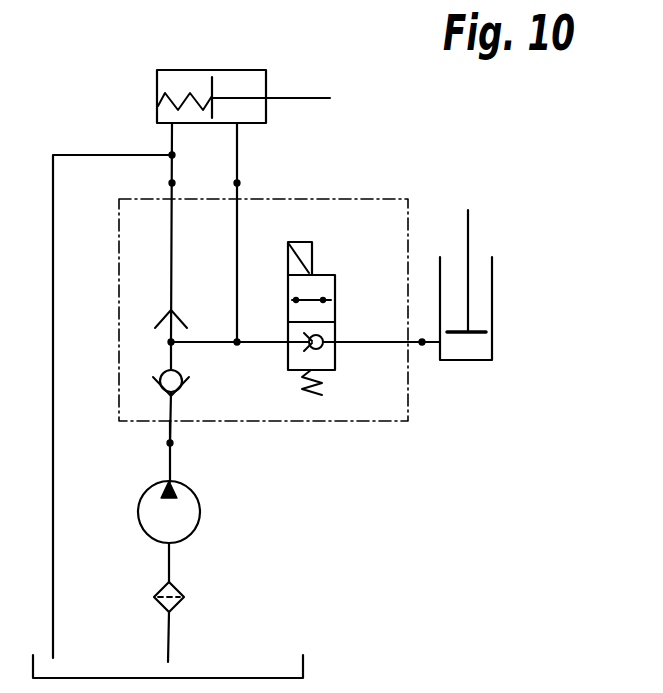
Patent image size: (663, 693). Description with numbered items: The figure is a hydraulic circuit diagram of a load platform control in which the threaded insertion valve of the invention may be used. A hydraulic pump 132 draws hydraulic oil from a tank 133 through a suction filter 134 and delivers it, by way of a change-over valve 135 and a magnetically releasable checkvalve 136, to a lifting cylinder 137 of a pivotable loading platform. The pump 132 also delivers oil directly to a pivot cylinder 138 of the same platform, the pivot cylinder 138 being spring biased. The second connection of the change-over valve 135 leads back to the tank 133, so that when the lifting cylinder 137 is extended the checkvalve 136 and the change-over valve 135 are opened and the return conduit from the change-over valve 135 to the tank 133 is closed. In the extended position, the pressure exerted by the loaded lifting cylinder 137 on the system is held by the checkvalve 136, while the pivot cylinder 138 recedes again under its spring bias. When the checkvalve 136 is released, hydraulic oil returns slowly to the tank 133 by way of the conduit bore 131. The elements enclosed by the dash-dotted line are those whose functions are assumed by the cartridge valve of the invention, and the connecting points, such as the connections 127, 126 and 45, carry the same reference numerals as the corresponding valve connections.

The pivot cylinder 138 is at (215, 70).
The conduit bore 131 is at (171, 183).
The pressure line 127 is at (238, 183).
The magnetically releasable checkvalve 136 is at (312, 266).
The lifting cylinder 137 is at (492, 338).
The connection point 45 is at (422, 342).
The change-over valve 135 is at (176, 345).
The pump line 126 is at (171, 443).
The hydraulic pump 132 is at (192, 506).
The suction filter 134 is at (173, 586).
The tank 133 is at (303, 665).